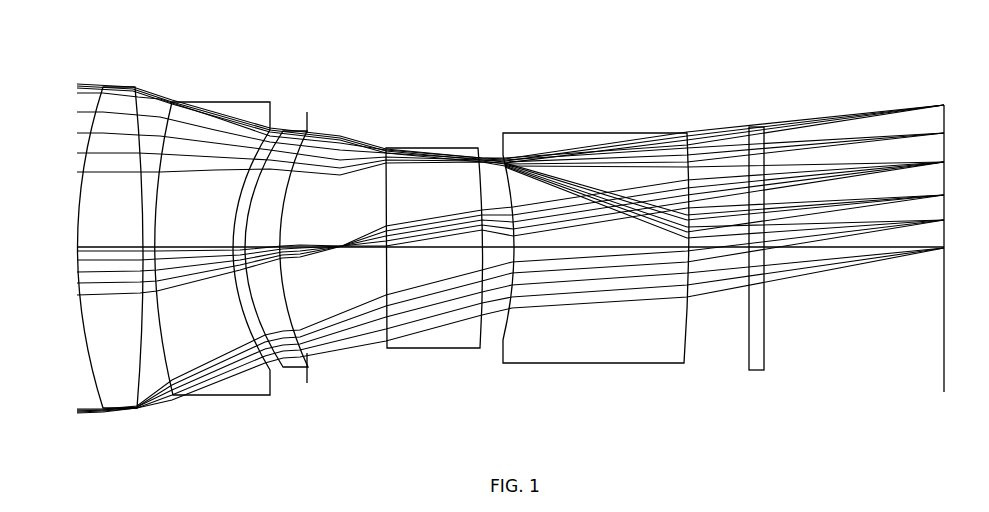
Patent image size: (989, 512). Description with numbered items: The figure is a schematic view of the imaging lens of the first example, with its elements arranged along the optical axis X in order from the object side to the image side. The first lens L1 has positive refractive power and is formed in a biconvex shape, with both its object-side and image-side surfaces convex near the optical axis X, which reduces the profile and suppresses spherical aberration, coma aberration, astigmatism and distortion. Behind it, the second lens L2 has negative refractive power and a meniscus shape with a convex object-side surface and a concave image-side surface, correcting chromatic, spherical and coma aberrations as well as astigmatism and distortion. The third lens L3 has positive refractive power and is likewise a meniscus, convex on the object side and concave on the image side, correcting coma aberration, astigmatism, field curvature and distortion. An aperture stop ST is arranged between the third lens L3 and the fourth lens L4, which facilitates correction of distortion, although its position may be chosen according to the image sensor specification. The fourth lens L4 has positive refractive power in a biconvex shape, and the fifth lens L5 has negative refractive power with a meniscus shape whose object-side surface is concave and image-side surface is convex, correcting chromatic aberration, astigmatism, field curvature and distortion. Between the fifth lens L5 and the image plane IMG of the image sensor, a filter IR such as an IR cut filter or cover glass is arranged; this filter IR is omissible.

The optical axis X is at (93, 246).
The first lens L1 is at (133, 86).
The second lens L2 is at (250, 102).
The third lens L3 is at (297, 130).
The aperture stop ST is at (303, 385).
The fourth lens L4 is at (452, 148).
The fifth lens L5 is at (605, 133).
The filter IR is at (752, 127).
The image plane IMG is at (943, 383).